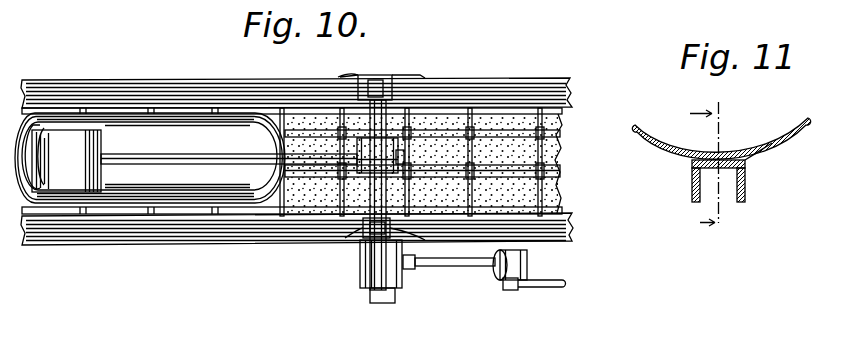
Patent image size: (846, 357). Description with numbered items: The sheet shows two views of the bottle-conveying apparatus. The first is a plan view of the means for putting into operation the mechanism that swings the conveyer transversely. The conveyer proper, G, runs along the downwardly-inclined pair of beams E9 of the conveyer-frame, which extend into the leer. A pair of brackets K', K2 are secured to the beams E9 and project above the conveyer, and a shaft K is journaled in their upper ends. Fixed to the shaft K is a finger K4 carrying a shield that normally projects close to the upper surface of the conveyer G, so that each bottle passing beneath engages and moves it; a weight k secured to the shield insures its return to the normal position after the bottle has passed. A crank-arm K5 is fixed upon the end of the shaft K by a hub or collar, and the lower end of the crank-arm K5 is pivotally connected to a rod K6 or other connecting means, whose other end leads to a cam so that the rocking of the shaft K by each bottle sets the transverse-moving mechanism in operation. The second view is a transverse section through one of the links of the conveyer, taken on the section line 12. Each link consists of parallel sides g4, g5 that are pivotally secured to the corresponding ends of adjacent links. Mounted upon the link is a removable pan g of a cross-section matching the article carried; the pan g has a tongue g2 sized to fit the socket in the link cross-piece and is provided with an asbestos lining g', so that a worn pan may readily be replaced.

In FIG. 10, the weight k is at (60, 148).
In FIG. 10, the finger K4 is at (282, 152).
In FIG. 10, the shaft K is at (403, 161).
In FIG. 10, the bracket K' is at (428, 68).
In FIG. 10, the conveyer G is at (556, 119).
In FIG. 10, the pair of beams E9 is at (200, 231).
In FIG. 10, the crank-arm K5 is at (372, 268).
In FIG. 10, the bracket K2 is at (480, 246).
In FIG. 10, the rod K6 is at (565, 284).
In FIG. 11, the section line 12 12 is at (740, 102).
In FIG. 11, the asbestos lining g' is at (725, 124).
In FIG. 11, the pan g is at (787, 163).
In FIG. 11, the tongue g2 is at (748, 164).
In FIG. 11, the side of link g5 is at (690, 187).
In FIG. 11, the side of link g4 is at (746, 198).